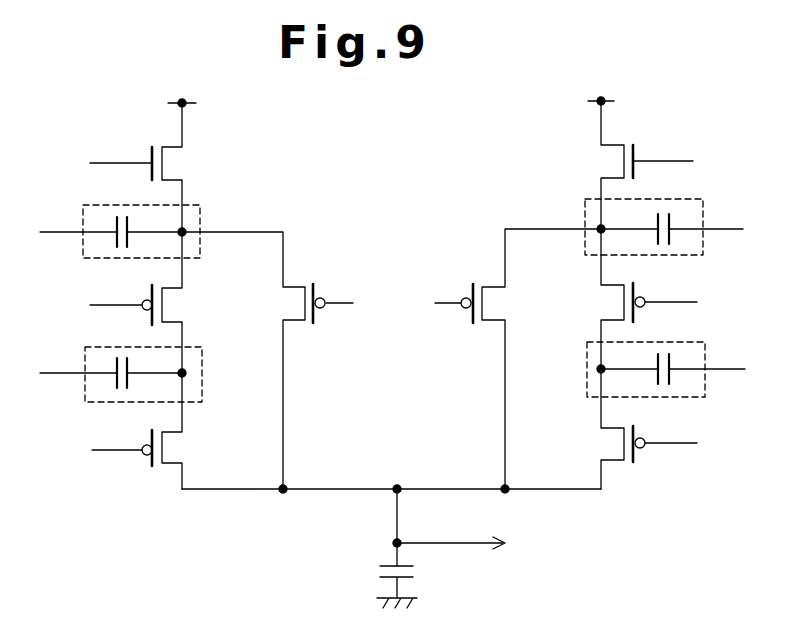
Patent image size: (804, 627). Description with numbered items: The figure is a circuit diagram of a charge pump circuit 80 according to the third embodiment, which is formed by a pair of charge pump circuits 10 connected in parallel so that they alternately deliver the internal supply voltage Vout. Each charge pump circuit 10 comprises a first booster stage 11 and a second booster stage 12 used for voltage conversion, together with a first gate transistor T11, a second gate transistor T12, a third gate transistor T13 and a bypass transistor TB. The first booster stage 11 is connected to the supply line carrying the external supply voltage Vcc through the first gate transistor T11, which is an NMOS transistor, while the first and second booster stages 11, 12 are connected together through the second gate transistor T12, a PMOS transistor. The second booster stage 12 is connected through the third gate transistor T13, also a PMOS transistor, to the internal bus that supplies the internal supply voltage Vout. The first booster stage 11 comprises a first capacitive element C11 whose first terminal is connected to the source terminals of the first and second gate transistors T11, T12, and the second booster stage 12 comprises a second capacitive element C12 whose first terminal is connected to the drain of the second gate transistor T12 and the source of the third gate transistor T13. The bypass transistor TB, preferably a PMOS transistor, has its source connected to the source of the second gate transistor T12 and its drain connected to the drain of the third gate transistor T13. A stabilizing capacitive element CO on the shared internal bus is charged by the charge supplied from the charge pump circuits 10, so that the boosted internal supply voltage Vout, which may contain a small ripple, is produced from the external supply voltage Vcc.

The charge pump circuit 80 is at (391, 301).
The charge pump circuit 10 is at (391, 324).
The first booster stage 11 is at (394, 211).
The second booster stage 12 is at (396, 353).
The first gate transistor T11 is at (175, 147).
The second gate transistor T12 is at (175, 287).
The third gate transistor T13 is at (175, 431).
The first capacitive element C11 is at (117, 215).
The second capacitive element C12 is at (117, 358).
The bypass transistor TB is at (300, 324).
The stabilizing capacitive element CO is at (380, 581).
The external supply voltage Vcc is at (411, 106).
The internal supply voltage Vout is at (471, 527).